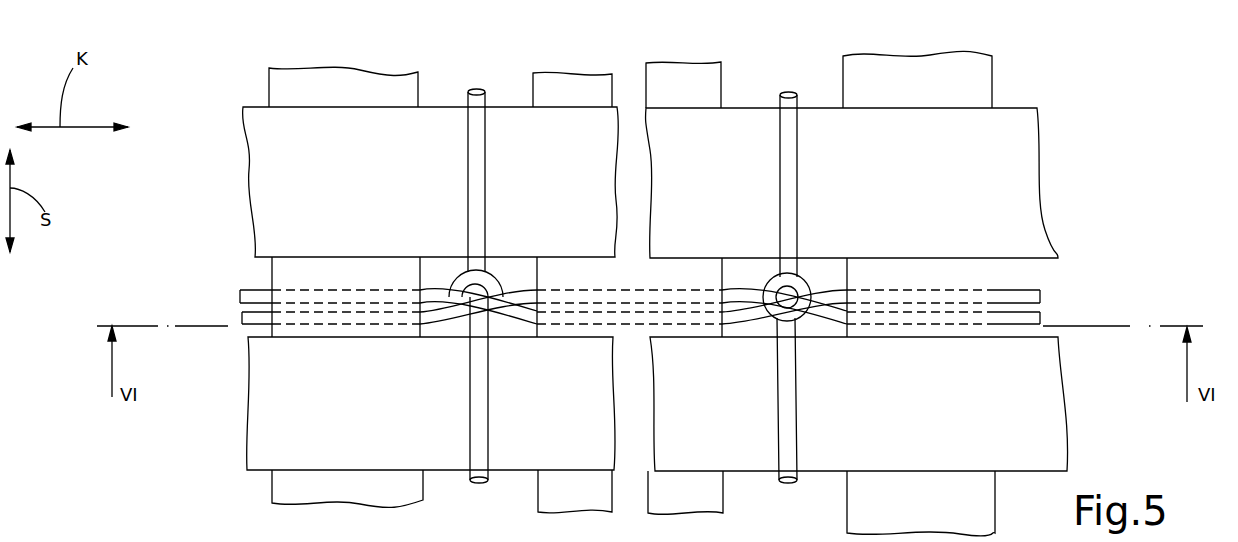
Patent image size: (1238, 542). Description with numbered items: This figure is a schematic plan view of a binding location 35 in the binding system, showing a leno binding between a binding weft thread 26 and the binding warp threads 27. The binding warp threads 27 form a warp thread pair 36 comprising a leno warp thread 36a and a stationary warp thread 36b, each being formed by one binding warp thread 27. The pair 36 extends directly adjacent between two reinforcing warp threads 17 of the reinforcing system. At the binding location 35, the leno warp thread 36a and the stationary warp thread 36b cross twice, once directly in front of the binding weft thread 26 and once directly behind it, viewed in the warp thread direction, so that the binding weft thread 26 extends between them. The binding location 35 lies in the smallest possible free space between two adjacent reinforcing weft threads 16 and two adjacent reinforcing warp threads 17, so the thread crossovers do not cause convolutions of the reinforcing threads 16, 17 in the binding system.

The reinforcing weft thread 16 is at (340, 83).
The reinforcing warp thread 17 is at (1018, 185).
The binding weft thread 26 is at (475, 407).
The binding warp thread 27 is at (1035, 318).
The binding location 35 is at (512, 260).
The warp thread pair 36 is at (222, 322).
The leno warp thread 36a is at (460, 277).
The stationary warp thread 36b is at (455, 338).